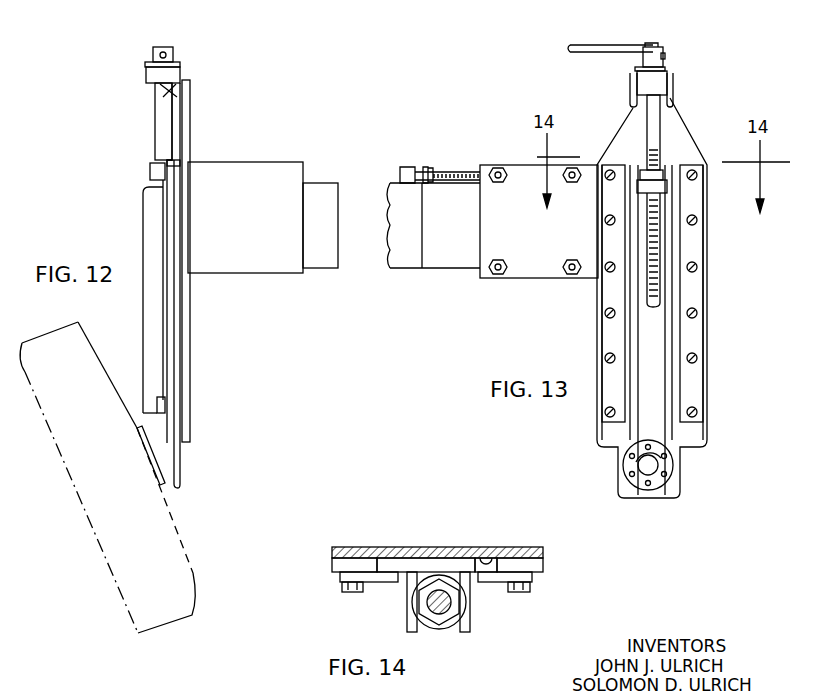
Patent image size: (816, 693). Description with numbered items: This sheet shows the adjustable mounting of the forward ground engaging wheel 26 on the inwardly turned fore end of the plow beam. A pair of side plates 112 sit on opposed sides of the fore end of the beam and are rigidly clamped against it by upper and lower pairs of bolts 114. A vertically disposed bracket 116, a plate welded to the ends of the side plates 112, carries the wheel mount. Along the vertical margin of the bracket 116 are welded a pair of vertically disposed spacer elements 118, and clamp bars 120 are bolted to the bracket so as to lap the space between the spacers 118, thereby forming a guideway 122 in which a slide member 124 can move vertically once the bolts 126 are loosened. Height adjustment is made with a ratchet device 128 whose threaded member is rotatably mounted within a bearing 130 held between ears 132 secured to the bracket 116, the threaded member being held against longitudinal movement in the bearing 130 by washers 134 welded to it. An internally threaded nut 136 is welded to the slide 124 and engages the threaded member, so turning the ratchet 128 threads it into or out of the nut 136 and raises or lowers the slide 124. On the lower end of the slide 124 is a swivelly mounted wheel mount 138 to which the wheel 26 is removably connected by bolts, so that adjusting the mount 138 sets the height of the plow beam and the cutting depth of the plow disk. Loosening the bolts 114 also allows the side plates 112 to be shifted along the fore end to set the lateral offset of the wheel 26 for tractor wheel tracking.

In FIG. 12, the ground engaging wheel 26 is at (167, 528).
In FIG. 12, the side plates 112 is at (273, 271).
In FIG. 13, the side plates 112 is at (553, 277).
In FIG. 13, the bolts 114 is at (497, 278).
In FIG. 12, the vertically disposed bracket 116 is at (186, 124).
In FIG. 13, the vertically disposed bracket 116 is at (682, 128).
In FIG. 14, the vertically disposed bracket 116 is at (430, 550).
In FIG. 14, the spacer elements 118 is at (337, 565).
In FIG. 13, the clamp bars 120 is at (696, 297).
In FIG. 14, the clamp bars 120 is at (390, 577).
In FIG. 14, the guideway 122 is at (481, 560).
In FIG. 12, the slide member 124 is at (161, 285).
In FIG. 13, the slide member 124 is at (653, 350).
In FIG. 14, the slide member 124 is at (388, 563).
In FIG. 13, the bolts 126 is at (697, 266).
In FIG. 12, the ratchet device 128 is at (160, 137).
In FIG. 13, the ratchet device 128 is at (575, 44).
In FIG. 14, the ratchet device 128 is at (455, 605).
In FIG. 13, the bearing 130 is at (665, 69).
In FIG. 12, the ears 132 is at (158, 86).
In FIG. 13, the ears 132 is at (673, 82).
In FIG. 13, the washers 134 is at (637, 70).
In FIG. 13, the internally threaded nut 136 is at (667, 173).
In FIG. 12, the wheel mount 138 is at (160, 486).
In FIG. 13, the wheel mount 138 is at (673, 463).